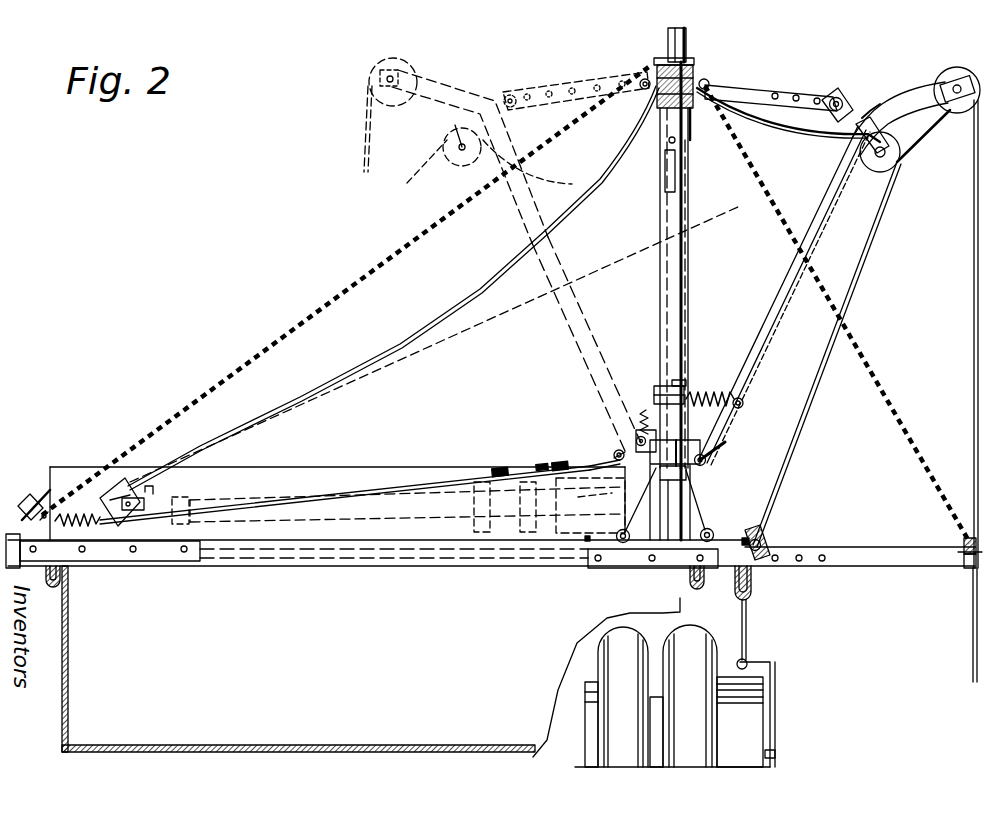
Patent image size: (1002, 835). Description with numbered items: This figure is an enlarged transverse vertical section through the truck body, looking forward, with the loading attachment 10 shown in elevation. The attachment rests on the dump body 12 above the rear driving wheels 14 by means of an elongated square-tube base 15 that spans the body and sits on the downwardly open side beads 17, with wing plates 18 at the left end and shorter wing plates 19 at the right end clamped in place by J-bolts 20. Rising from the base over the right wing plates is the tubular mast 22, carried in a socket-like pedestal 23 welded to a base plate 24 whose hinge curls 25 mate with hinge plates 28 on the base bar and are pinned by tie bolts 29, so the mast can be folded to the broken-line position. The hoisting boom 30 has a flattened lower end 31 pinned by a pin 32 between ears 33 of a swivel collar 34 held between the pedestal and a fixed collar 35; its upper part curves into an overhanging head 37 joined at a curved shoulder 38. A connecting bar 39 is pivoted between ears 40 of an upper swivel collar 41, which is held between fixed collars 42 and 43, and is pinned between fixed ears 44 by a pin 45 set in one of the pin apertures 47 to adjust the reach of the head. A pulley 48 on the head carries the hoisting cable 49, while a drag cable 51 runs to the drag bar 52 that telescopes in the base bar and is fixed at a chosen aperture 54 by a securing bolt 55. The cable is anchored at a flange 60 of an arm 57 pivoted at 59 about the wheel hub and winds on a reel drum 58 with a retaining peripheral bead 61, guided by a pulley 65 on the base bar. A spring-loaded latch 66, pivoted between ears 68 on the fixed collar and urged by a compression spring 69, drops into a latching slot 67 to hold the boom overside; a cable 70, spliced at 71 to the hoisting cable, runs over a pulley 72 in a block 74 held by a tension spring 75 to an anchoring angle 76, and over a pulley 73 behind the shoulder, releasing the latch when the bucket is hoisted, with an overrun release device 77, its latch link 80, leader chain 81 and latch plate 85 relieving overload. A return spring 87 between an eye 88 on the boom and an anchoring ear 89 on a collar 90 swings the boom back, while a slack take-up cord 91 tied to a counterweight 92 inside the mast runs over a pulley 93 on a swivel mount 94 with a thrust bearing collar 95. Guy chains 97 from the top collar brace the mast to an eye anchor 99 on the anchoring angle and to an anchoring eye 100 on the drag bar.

The loading attachment 10 is at (318, 572).
The dump body 12 is at (68, 678).
The rear driving wheels 14 is at (680, 762).
The base 15 is at (458, 568).
The side beads 17 is at (64, 575).
The wing plates 18 is at (184, 566).
The wing plates 19 is at (645, 569).
The J-bolts 20 is at (712, 590).
The mast 22 is at (686, 285).
The pedestal 23 is at (686, 488).
The base plate 24 is at (697, 557).
The hinge curls 25 is at (710, 530).
The hinge plates 28 is at (748, 538).
The tie bolts 29 is at (722, 532).
The hoisting boom 30 is at (530, 222).
The flattened lower end 31 is at (716, 449).
The pin 32 is at (706, 460).
The ears 33 is at (690, 440).
The swivel collar 34 is at (686, 474).
The fixed collar 35 is at (668, 440).
The overhanging head 37 is at (450, 90).
The curved shoulder 38 is at (870, 110).
The connecting bar 39 is at (580, 86).
The ears 40 is at (690, 112).
The swivel collar 41 is at (645, 89).
The upper fixed collar 42 is at (695, 68).
The lower fixed collar 43 is at (669, 140).
The fixed ears 44 is at (510, 108).
The pin 45 is at (838, 97).
The pin apertures 47 is at (797, 95).
The pulley 48 is at (405, 60).
The hoisting cable 49 is at (370, 130).
The drag cable 51 is at (973, 628).
The drag bar 52 is at (918, 565).
The apertures 54 is at (822, 555).
The securing bolt 55 is at (755, 540).
The arm 57 is at (775, 690).
The reel drum 58 is at (748, 724).
The arm securing point 59 is at (775, 744).
The flange 60 is at (772, 660).
The peripheral bead 61 is at (758, 699).
The pulley 65 is at (768, 532).
The latch 66 is at (636, 436).
The latching slot 67 is at (625, 488).
The ears 68 is at (637, 441).
The compression spring 69 is at (646, 425).
The cable 70 is at (516, 282).
The splice 71 is at (903, 150).
The pulley 72 is at (125, 487).
The pulley 73 is at (880, 167).
The block 74 is at (100, 500).
The tension spring 75 is at (92, 520).
The anchoring angle 76 is at (30, 508).
The overrun release device 77 is at (596, 464).
The latch link 80 is at (562, 462).
The leader chain 81 is at (530, 466).
The latch plate 85 is at (614, 455).
The return spring 87 is at (710, 392).
The eye 88 is at (744, 403).
The anchoring ear 89 is at (686, 383).
The collar 90 is at (654, 393).
The slack take-up cord 91 is at (667, 151).
The counterweight 92 is at (665, 195).
The pulley 93 is at (686, 44).
The swivel mount 94 is at (668, 34).
The thrust bearing collar 95 is at (654, 60).
The guy chains 97 is at (265, 352).
The eye anchor 99 is at (40, 508).
The anchoring eye 100 is at (964, 542).